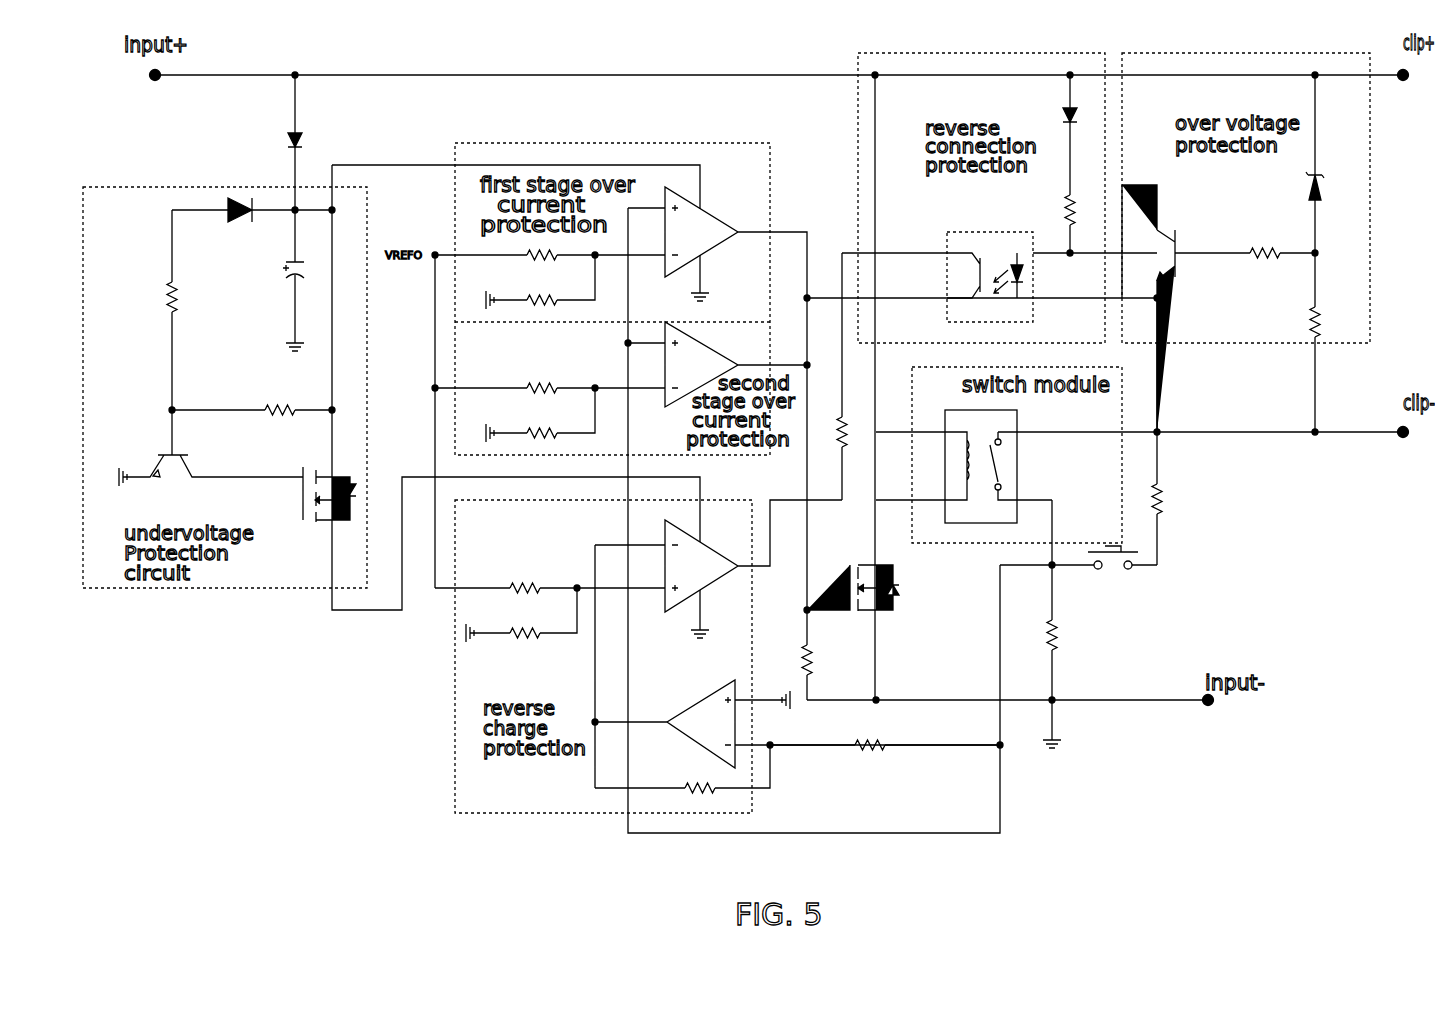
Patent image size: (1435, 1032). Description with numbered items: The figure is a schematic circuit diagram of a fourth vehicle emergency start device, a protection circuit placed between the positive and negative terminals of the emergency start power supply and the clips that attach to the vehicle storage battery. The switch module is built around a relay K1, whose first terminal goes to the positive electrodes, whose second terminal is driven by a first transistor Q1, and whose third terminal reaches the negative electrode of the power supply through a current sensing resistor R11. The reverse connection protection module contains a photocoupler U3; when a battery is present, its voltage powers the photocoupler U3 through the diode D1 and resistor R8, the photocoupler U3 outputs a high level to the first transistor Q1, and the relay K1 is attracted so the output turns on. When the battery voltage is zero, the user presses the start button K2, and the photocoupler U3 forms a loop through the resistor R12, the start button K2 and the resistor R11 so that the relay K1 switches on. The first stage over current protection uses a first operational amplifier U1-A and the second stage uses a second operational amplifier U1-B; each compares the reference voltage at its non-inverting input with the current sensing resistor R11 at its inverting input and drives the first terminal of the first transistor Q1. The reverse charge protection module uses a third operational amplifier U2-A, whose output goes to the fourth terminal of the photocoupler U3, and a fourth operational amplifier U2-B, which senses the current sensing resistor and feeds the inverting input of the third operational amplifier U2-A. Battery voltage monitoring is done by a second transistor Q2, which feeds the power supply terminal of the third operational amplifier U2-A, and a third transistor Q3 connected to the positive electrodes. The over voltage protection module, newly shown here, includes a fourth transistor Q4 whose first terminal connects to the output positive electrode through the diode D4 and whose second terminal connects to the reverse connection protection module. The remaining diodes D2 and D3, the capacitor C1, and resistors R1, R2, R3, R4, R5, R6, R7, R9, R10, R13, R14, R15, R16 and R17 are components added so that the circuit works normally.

The diode D1 is at (1079, 135).
The diode D2 is at (304, 144).
The diode D3 is at (253, 220).
The diode D4 is at (1325, 191).
The resistor R1 is at (550, 246).
The resistor R2 is at (540, 282).
The resistor R3 is at (548, 379).
The resistor R4 is at (540, 415).
The resistor R5 is at (550, 580).
The resistor R6 is at (521, 615).
The resistor R7 is at (850, 376).
The resistor R8 is at (1060, 223).
The resistor R9 is at (682, 769).
The resistor R10 is at (885, 737).
The current sensing resistor R11 is at (1062, 624).
The resistor R12 is at (1169, 431).
The resistor R13 is at (819, 655).
The resistor R14 is at (252, 402).
The resistor R15 is at (189, 310).
The resistor R16 is at (1246, 261).
The resistor R17 is at (1327, 369).
The capacitor C1 is at (278, 280).
The first transistor Q1 is at (863, 578).
The second transistor Q2 is at (314, 494).
The third transistor Q3 is at (211, 454).
The fourth transistor Q4 is at (1175, 308).
The first operational amplifier U1-A is at (719, 400).
The second operational amplifier U1-B is at (716, 362).
The third operational amplifier U2-A is at (718, 556).
The fourth operational amplifier U2-B is at (797, 666).
The photocoupler U3 is at (990, 284).
The relay K1 is at (1139, 460).
The start button K2 is at (1078, 570).